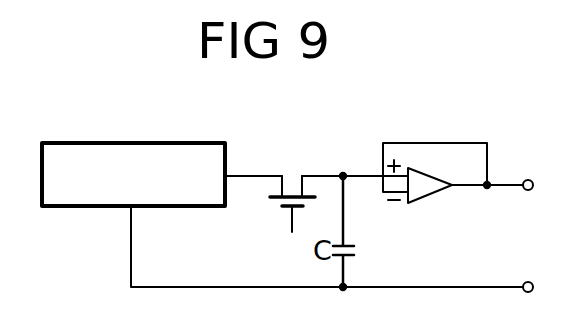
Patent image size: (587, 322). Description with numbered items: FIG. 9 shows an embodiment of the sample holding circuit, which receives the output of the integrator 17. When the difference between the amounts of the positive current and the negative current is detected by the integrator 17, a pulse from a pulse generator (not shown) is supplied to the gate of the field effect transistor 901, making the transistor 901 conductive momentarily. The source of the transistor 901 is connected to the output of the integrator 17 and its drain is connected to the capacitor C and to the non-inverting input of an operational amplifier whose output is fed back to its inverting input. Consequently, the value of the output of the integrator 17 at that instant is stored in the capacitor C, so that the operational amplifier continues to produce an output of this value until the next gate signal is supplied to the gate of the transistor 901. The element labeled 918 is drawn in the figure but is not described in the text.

The integrator 17 is at (110, 152).
The field effect transistor switch 918 is at (296, 141).
The field effect transistor 901 is at (320, 193).